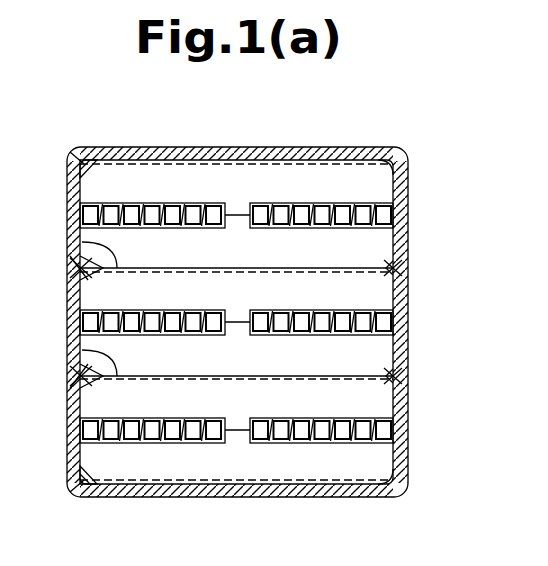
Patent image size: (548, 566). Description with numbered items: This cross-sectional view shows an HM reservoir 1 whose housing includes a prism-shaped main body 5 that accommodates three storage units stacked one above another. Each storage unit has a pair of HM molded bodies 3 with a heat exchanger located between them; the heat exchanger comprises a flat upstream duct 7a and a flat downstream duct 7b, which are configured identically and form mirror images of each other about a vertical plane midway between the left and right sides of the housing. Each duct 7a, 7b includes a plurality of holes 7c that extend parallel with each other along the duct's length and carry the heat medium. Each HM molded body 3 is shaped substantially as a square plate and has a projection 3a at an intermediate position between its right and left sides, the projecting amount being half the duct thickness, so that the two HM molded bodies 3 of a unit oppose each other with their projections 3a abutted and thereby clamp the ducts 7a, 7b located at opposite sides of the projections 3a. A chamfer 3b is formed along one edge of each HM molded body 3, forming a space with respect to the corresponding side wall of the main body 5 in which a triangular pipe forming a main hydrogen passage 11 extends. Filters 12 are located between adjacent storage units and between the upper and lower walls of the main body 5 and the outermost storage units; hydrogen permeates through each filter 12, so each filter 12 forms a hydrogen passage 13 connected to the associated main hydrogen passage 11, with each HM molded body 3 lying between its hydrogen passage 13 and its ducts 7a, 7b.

The HM reservoir 1 is at (449, 138).
The HM molded body 3 is at (395, 185).
The projection 3a is at (238, 442).
The chamfer 3b is at (85, 158).
The main body 5 is at (408, 190).
The upstream duct 7a is at (80, 215).
The downstream duct 7b is at (393, 215).
The holes 7c is at (370, 204).
The main hydrogen passage 11 is at (74, 154).
The filter 12 is at (152, 150).
The hydrogen passage 13 is at (240, 160).